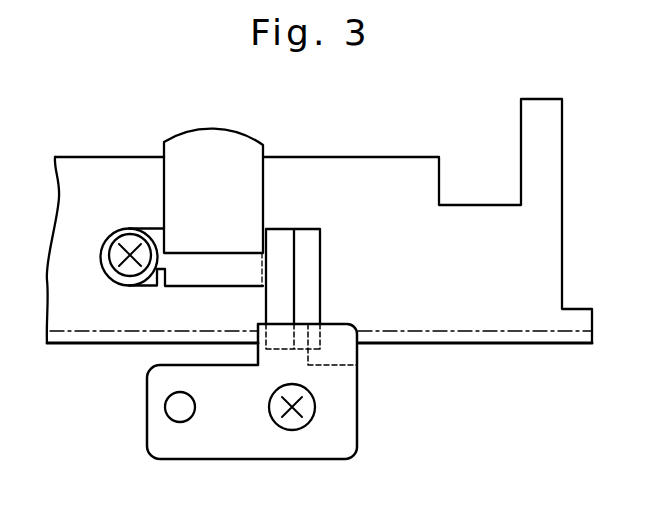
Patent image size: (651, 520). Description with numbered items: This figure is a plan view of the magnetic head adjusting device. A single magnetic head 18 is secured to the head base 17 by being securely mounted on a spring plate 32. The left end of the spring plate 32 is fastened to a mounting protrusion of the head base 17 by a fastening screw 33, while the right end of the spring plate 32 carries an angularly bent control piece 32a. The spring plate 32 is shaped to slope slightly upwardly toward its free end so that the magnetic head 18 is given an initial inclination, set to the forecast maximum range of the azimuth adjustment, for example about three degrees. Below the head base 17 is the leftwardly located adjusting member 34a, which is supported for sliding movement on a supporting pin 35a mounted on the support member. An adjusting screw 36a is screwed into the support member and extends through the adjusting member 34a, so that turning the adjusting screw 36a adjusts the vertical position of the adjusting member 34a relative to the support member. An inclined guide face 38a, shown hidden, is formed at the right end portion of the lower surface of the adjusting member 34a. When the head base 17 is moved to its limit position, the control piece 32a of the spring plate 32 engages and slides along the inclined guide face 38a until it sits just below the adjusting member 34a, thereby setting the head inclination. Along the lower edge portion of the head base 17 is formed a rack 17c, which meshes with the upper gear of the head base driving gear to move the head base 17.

The head base 17 is at (366, 185).
The rack 17c is at (547, 345).
The magnetic head 18 is at (243, 150).
The spring plate 32 is at (207, 275).
The control piece 32a is at (307, 292).
The fastening screw 33 is at (123, 242).
The adjusting member 34a is at (262, 445).
The supporting pin 35a is at (170, 410).
The adjusting screw 36a is at (307, 410).
The inclined guide face 38a is at (365, 363).